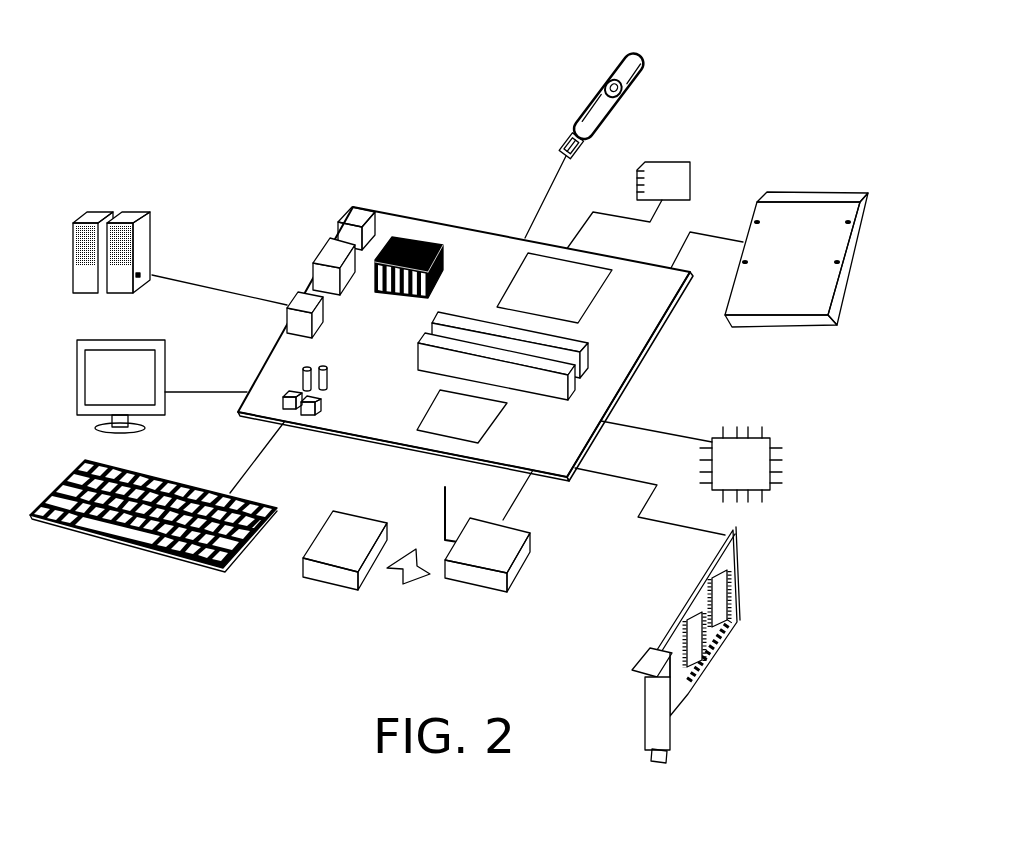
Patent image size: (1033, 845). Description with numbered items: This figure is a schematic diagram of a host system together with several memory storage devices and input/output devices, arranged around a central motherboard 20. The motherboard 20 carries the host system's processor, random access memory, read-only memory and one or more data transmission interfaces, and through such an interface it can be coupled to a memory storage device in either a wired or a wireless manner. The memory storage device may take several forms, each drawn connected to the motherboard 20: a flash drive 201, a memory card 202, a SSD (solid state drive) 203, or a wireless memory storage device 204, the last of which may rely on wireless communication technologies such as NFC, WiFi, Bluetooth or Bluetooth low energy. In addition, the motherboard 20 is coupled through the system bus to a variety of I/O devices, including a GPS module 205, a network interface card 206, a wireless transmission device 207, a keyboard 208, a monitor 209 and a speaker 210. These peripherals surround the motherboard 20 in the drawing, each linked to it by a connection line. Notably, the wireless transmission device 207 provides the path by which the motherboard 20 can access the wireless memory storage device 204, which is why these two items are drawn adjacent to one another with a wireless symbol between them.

The motherboard 20 is at (465, 247).
The flash drive 201 is at (588, 95).
The memory card 202 is at (693, 168).
The SSD (solid state drive) 203 is at (815, 190).
The wireless memory storage device 204 is at (318, 523).
The GPS (Global Positioning System) module 205 is at (783, 462).
The network interface card 206 is at (738, 588).
The wireless transmission device 207 is at (530, 571).
The keyboard 208 is at (160, 553).
The monitor 209 is at (77, 398).
The speaker 210 is at (72, 277).